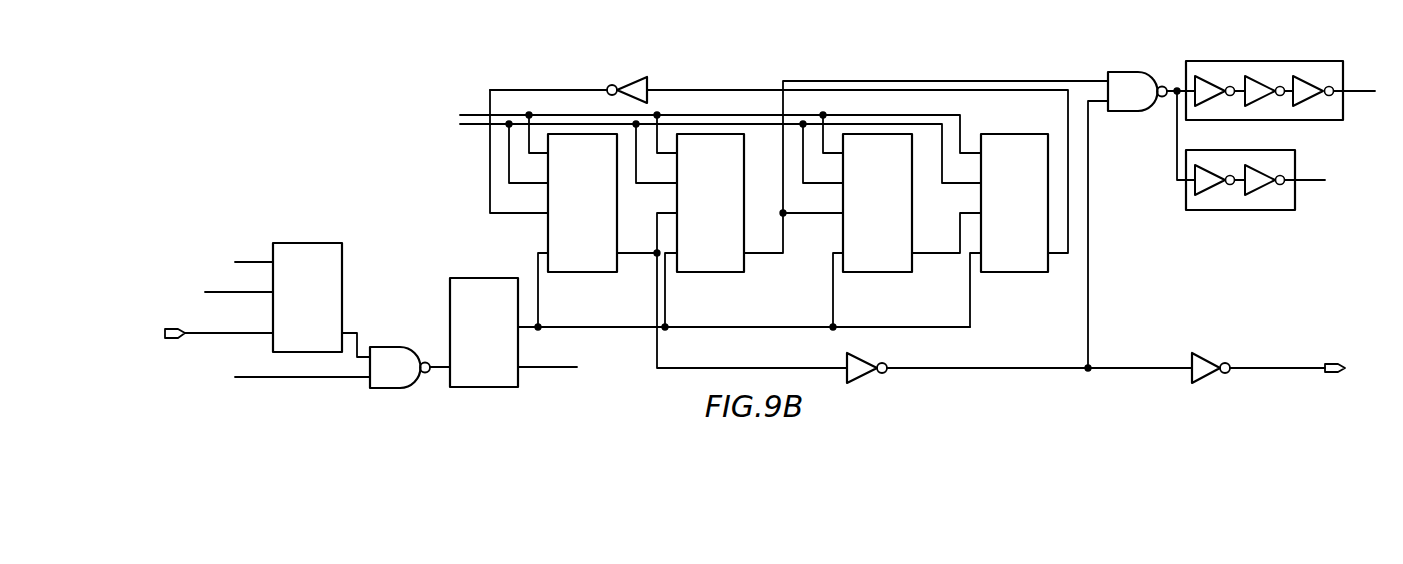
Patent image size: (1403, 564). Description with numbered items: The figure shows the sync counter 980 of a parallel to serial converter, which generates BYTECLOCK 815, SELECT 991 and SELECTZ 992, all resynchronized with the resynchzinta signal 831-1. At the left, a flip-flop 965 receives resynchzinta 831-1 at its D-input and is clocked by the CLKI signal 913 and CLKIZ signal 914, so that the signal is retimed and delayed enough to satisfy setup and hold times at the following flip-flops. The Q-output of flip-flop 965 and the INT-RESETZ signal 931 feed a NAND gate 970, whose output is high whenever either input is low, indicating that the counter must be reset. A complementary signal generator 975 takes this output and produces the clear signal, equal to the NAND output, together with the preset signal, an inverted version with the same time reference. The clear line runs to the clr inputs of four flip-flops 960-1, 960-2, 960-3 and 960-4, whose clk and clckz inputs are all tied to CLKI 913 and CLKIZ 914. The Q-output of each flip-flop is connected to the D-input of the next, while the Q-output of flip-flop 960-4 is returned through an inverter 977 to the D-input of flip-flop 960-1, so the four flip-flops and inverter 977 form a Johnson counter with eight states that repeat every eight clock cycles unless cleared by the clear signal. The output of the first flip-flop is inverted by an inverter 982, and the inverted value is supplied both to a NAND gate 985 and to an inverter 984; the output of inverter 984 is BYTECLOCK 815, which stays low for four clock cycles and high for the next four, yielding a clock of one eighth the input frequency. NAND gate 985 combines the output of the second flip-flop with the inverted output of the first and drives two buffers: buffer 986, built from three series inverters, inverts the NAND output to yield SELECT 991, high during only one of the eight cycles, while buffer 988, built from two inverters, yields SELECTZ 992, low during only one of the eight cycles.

The sync counter 980 is at (340, 160).
The flip-flop 965 is at (305, 243).
The CLKI signal 913 is at (252, 262).
The CLKIZ signal 914 is at (225, 291).
The resynchzinta signal 831-1 is at (213, 335).
The INT-RESETZ signal 931 is at (253, 379).
The NAND gate 970 is at (393, 347).
The complementary signal generator 975 is at (485, 388).
The flip-flop 960-1 is at (582, 273).
The flip-flop 960-2 is at (710, 273).
The flip-flop 960-3 is at (876, 273).
The flip-flop 960-4 is at (1010, 273).
The inverter 977 is at (628, 78).
The inverter 982 is at (862, 378).
The inverter 984 is at (1205, 380).
The NAND gate 985 is at (1122, 72).
The buffer 986 is at (1277, 58).
The buffer 988 is at (1249, 216).
The SELECT signal 991 is at (1358, 90).
The SELECTZ signal 992 is at (1308, 182).
The BYTECLOCK signal 815 is at (1278, 372).